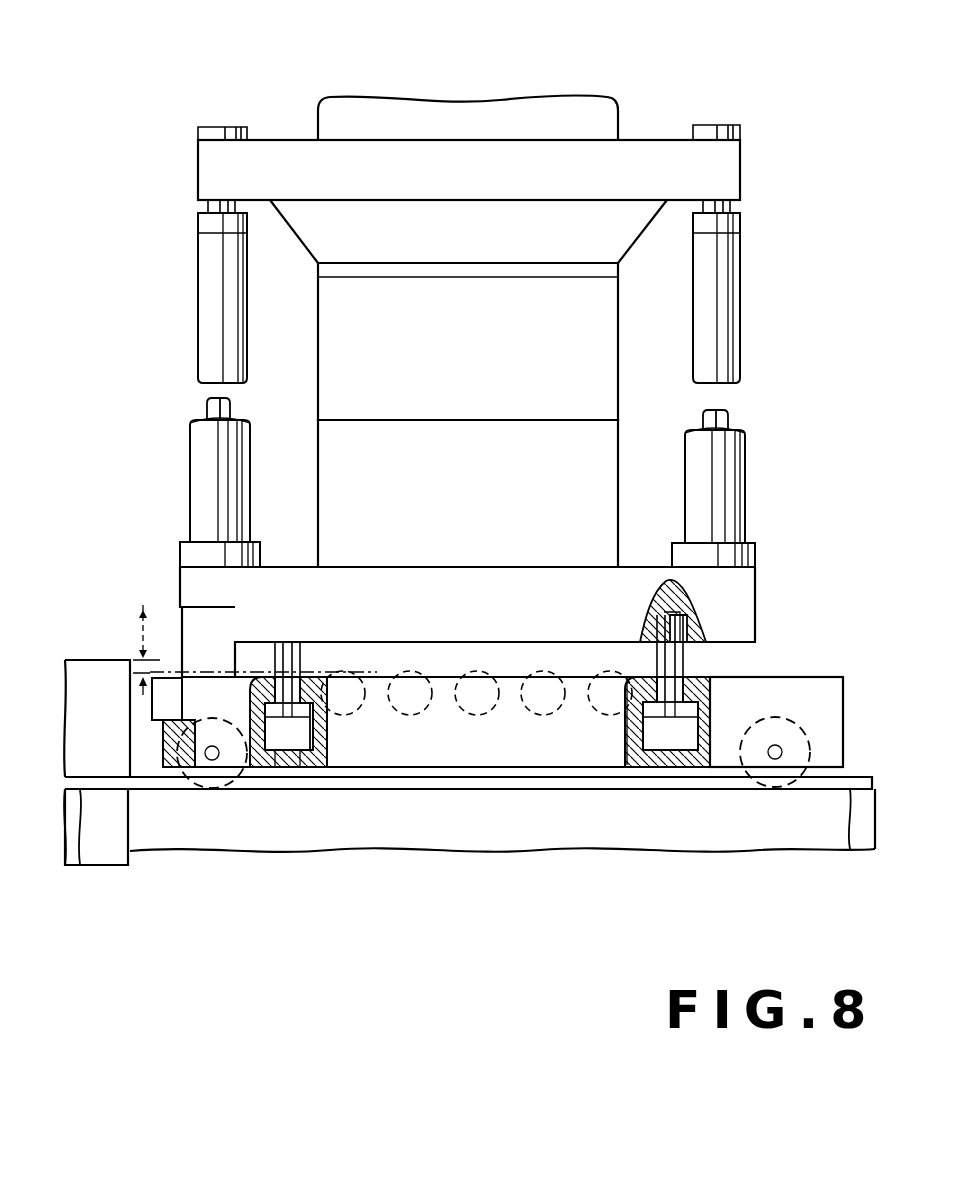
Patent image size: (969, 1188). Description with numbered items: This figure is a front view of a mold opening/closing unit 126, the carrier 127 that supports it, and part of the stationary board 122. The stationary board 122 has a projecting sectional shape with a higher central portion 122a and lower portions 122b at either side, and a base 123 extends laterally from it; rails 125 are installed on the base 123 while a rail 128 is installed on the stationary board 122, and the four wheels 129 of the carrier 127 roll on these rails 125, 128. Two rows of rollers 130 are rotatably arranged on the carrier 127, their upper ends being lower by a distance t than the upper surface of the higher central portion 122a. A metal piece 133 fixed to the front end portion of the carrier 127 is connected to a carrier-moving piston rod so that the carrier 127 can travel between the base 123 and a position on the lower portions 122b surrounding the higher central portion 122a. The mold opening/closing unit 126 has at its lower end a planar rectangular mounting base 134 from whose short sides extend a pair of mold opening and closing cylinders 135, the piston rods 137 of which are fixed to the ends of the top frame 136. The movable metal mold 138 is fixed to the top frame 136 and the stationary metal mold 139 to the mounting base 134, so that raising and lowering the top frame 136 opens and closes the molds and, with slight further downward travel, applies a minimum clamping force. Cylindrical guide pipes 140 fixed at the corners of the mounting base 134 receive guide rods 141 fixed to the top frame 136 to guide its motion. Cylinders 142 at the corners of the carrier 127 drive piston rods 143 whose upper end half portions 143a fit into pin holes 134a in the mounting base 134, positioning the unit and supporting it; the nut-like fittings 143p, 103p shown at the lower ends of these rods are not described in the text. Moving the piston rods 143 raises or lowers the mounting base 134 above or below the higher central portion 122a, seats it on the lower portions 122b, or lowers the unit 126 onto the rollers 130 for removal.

The mold opening/closing unit 126 is at (508, 161).
The top frame 136 is at (625, 175).
The piston rod 137 is at (206, 207).
The mold opening and closing cylinder 135 is at (197, 305).
The movable metal mold 138 is at (332, 348).
The stationary metal mold 139 is at (332, 488).
The guide rod 141 is at (207, 410).
The cylindrical guide pipe 140 is at (190, 470).
The mounting base 134 is at (760, 590).
The pin hole 134a is at (686, 624).
The piston rod 143 is at (300, 662).
The upper end half portion 143a is at (686, 648).
The pin nut 143p is at (678, 750).
The pin nut 103p is at (292, 768).
The cylinder 142 is at (310, 768).
The carrier 127 is at (822, 677).
The rail 125 is at (587, 790).
The roller 130 is at (345, 716).
The wheel 129 is at (237, 790).
The rail 128 is at (112, 790).
The base 123 is at (850, 849).
The stationary board 122 is at (89, 729).
The higher central portion 122a is at (76, 660).
The lower portion 122b is at (80, 790).
The metal piece 133 is at (152, 706).